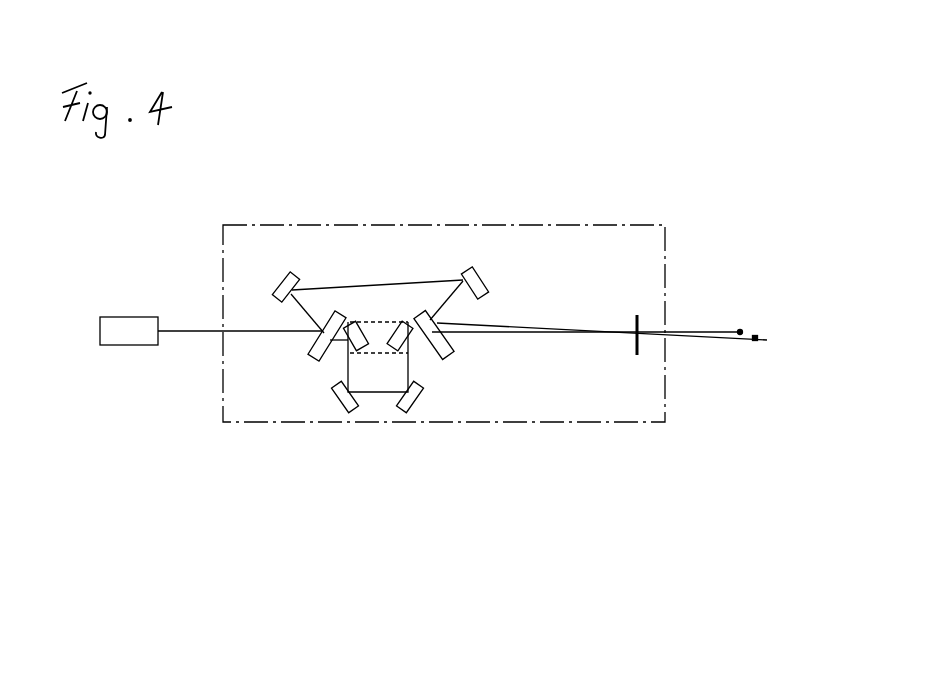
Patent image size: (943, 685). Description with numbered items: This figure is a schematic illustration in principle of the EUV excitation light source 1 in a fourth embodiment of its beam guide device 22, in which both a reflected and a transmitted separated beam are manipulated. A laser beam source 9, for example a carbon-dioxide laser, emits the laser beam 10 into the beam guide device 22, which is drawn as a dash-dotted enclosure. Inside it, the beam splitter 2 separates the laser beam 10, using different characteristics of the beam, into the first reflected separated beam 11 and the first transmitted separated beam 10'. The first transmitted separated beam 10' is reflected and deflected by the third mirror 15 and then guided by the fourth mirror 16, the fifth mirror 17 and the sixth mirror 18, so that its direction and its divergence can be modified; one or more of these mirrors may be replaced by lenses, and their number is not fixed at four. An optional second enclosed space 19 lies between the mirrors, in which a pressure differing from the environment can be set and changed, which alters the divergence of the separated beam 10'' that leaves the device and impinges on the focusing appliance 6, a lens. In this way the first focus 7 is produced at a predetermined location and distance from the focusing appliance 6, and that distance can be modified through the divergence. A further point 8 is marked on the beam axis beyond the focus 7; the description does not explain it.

The EUV excitation light source 1 is at (163, 597).
The beam splitter 2 is at (344, 326).
The focusing appliance 6 is at (640, 317).
The first focus 7 is at (740, 331).
The measurement point 8 is at (748, 462).
The laser beam source 9 is at (120, 402).
The laser beam 10 is at (240, 394).
The first transmitted separated beam 10' is at (295, 392).
The separated beam 10'' is at (590, 394).
The first reflected separated beam 11 is at (307, 313).
The third mirror 15 is at (314, 497).
The fourth mirror 16 is at (354, 487).
The fifth mirror 17 is at (407, 487).
The sixth mirror 18 is at (469, 497).
The second enclosed space 19 is at (382, 323).
The beam guide device 22 is at (570, 493).